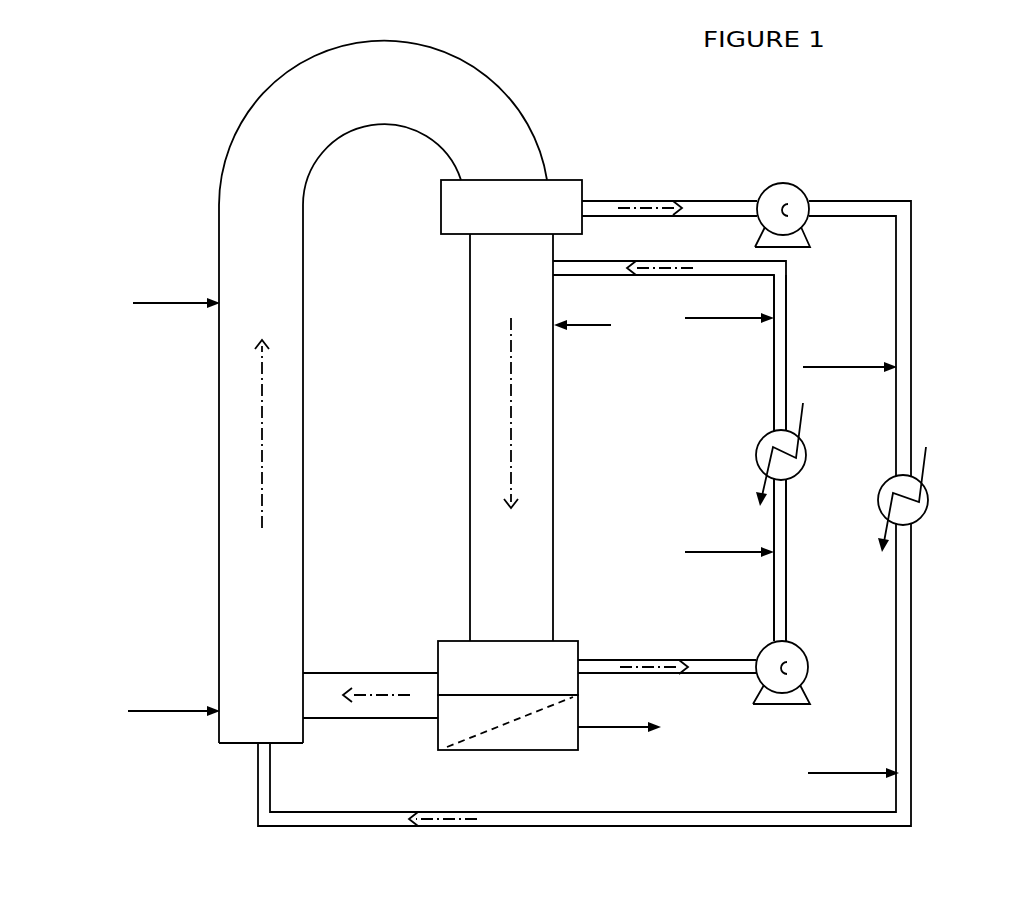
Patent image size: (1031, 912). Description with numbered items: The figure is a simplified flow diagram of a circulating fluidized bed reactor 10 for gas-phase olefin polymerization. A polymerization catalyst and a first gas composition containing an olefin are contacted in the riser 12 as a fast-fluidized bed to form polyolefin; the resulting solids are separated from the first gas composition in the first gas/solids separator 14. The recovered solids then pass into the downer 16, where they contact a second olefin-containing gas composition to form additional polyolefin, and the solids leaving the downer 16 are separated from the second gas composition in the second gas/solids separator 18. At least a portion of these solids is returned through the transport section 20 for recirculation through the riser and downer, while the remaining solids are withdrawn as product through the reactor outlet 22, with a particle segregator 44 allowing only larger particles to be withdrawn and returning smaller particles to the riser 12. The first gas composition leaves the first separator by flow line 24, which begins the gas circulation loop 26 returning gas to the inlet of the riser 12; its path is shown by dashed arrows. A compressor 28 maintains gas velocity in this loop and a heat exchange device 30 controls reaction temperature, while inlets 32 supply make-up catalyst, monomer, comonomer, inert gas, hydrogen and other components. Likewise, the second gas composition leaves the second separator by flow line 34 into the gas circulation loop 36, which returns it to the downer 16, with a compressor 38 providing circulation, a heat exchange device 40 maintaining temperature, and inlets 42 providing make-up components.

The circulating fluidized bed reactor 10 is at (145, 175).
The riser 12 is at (218, 633).
The first gas/solids separator 14 is at (450, 234).
The downer 16 is at (470, 285).
The second gas/solids separator 18 is at (458, 640).
The transport section 20 is at (326, 672).
The reactor outlet 22 is at (635, 732).
The flow line 24 is at (623, 200).
The gas circulation loop 26 is at (918, 256).
The compressor 28 is at (797, 183).
The heat exchange device 30 is at (923, 513).
The inlets 32 is at (155, 305).
The flow line 34 is at (597, 655).
The gas circulation loop 36 is at (758, 389).
The compressor 38 is at (760, 645).
The heat exchange device 40 is at (755, 445).
The inlets 42 is at (592, 330).
The particle segregator 44 is at (438, 740).